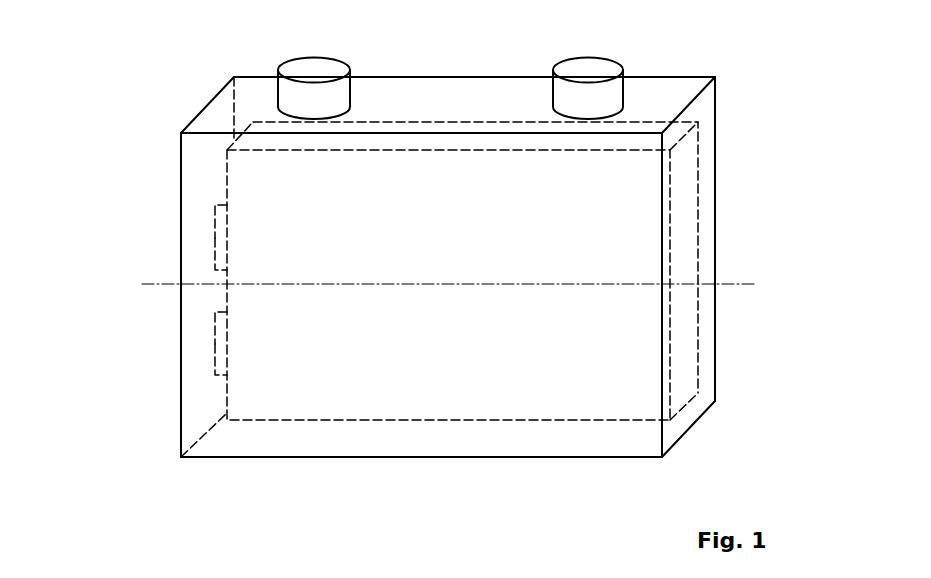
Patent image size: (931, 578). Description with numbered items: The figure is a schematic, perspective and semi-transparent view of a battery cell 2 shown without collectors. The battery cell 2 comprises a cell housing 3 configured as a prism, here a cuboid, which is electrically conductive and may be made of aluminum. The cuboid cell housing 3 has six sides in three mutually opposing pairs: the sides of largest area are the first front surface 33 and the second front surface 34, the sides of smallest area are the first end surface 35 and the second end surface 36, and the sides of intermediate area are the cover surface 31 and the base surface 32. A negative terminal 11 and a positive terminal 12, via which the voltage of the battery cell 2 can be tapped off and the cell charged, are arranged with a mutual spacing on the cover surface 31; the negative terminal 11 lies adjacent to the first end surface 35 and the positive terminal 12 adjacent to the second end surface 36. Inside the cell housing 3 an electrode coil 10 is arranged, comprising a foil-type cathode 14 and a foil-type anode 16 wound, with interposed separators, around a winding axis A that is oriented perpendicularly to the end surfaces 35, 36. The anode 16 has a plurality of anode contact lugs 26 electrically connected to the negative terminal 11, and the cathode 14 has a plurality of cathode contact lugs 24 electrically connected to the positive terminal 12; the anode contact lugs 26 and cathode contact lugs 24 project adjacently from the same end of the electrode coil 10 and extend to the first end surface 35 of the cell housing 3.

The battery cell 2 is at (140, 86).
The cell housing 3 is at (668, 83).
The electrode coil 10 is at (700, 202).
The negative terminal 11 is at (312, 62).
The positive terminal 12 is at (588, 62).
The cathode 14 is at (215, 330).
The anode 16 is at (215, 223).
The cathode contact lugs 24 is at (215, 358).
The anode contact lugs 26 is at (215, 252).
The cover surface 31 is at (405, 93).
The base surface 32 is at (467, 457).
The first front surface 33 is at (635, 335).
The second front surface 34 is at (716, 112).
The first end surface 35 is at (179, 163).
The second end surface 36 is at (708, 143).
The winding axis A is at (745, 284).